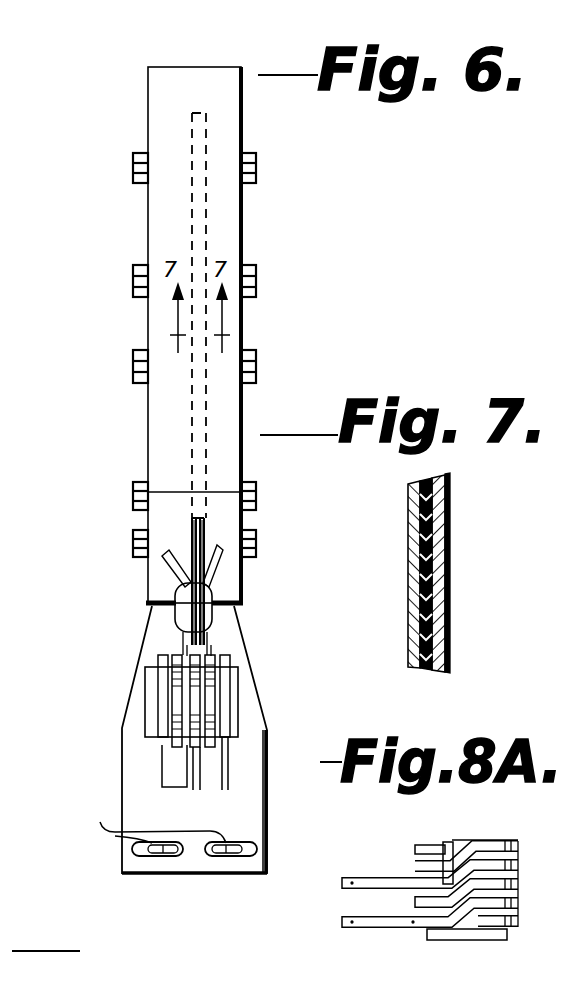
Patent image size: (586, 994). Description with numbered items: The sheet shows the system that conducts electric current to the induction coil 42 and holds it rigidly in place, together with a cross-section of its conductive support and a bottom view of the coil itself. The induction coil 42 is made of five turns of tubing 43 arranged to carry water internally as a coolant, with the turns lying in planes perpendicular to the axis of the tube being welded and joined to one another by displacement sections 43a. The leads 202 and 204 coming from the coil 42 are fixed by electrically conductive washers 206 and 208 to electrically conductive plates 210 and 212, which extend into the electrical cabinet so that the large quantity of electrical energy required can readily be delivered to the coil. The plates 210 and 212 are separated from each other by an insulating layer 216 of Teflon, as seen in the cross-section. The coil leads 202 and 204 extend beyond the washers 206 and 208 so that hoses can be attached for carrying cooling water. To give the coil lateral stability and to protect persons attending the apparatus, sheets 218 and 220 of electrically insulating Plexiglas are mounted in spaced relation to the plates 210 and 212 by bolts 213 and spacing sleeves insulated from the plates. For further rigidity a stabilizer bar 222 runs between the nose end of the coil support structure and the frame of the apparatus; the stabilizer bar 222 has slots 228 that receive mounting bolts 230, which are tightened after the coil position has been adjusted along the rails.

In FIG. 6, the bolts 213 is at (135, 272).
In FIG. 6, the sheet of electrically insulating material 218 is at (148, 325).
In FIG. 6, the sheet of electrically insulating material 220 is at (243, 322).
In FIG. 6, the electrically conductive plate 210 is at (192, 529).
In FIG. 7, the electrically conductive plate 210 is at (408, 550).
In FIG. 6, the electrically conductive plate 212 is at (204, 529).
In FIG. 7, the electrically conductive plate 212 is at (450, 562).
In FIG. 7, the insulating layer 216 is at (450, 474).
In FIG. 6, the electrically conductive washer 208 is at (220, 586).
In FIG. 6, the electrically conductive washer 206 is at (175, 612).
In FIG. 6, the lead 204 is at (217, 643).
In FIG. 6, the lead 202 is at (175, 645).
In FIG. 6, the induction coil 42 is at (240, 678).
In FIG. 8A, the induction coil 42 is at (398, 859).
In FIG. 6, the stabilizer bar 222 is at (122, 728).
In FIG. 6, the mounting bolts 230 is at (129, 819).
In FIG. 6, the slots 228 is at (210, 857).
In FIG. 8A, the tubing 43 is at (413, 930).
In FIG. 8A, the displacement sections 43a is at (462, 848).